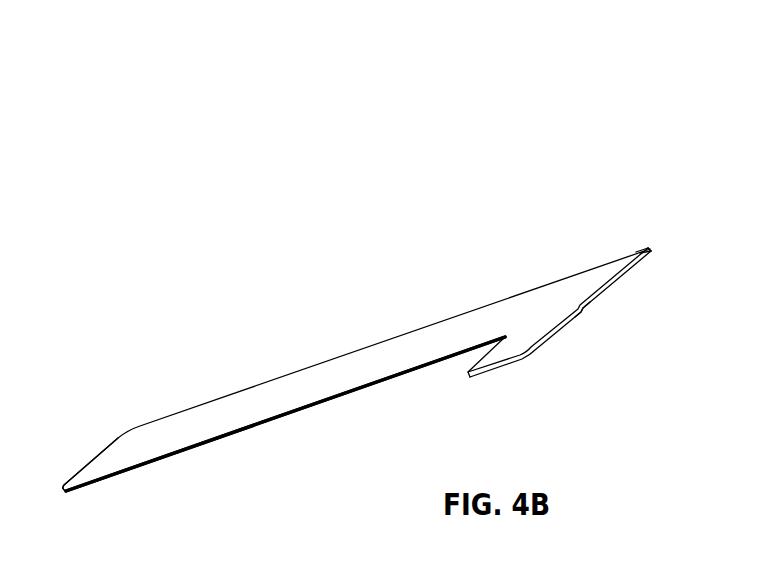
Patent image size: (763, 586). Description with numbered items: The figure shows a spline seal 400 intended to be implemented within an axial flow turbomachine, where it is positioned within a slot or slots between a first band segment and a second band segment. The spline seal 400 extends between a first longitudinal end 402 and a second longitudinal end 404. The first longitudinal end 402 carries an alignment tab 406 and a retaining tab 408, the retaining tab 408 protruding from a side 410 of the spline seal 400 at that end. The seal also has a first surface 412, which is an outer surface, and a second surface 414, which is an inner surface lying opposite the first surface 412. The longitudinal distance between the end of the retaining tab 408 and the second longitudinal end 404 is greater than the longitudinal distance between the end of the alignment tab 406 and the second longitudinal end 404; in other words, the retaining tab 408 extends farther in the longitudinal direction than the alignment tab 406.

The spline seal 400 is at (387, 266).
The first longitudinal end 402 is at (657, 245).
The second longitudinal end 404 is at (88, 452).
The alignment tab 406 is at (628, 275).
The retaining tab 408 is at (576, 316).
The side 410 is at (208, 443).
The first surface 412 is at (437, 320).
The second surface 414 is at (346, 408).